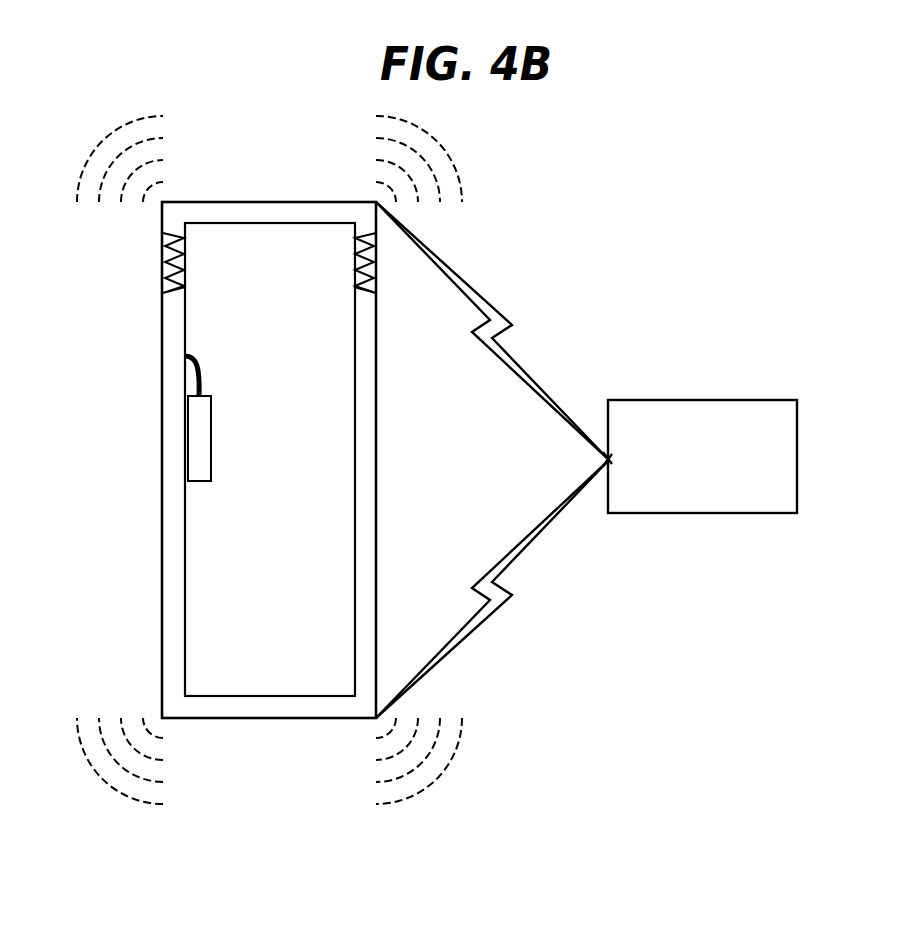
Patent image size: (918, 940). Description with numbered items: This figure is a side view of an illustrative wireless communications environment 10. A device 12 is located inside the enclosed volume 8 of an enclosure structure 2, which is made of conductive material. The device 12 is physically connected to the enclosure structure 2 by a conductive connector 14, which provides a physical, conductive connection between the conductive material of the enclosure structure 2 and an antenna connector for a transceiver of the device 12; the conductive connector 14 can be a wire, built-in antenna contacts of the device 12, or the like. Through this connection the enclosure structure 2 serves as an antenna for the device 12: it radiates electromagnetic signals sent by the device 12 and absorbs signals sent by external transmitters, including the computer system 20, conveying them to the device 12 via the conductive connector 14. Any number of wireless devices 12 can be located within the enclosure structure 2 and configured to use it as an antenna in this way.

The enclosure structure 2 is at (115, 269).
The enclosed volume 8 is at (280, 451).
The wireless communications environment 10 is at (703, 213).
The device 12 is at (200, 445).
The conductive connector 14 is at (191, 373).
The computer system 20 is at (690, 499).